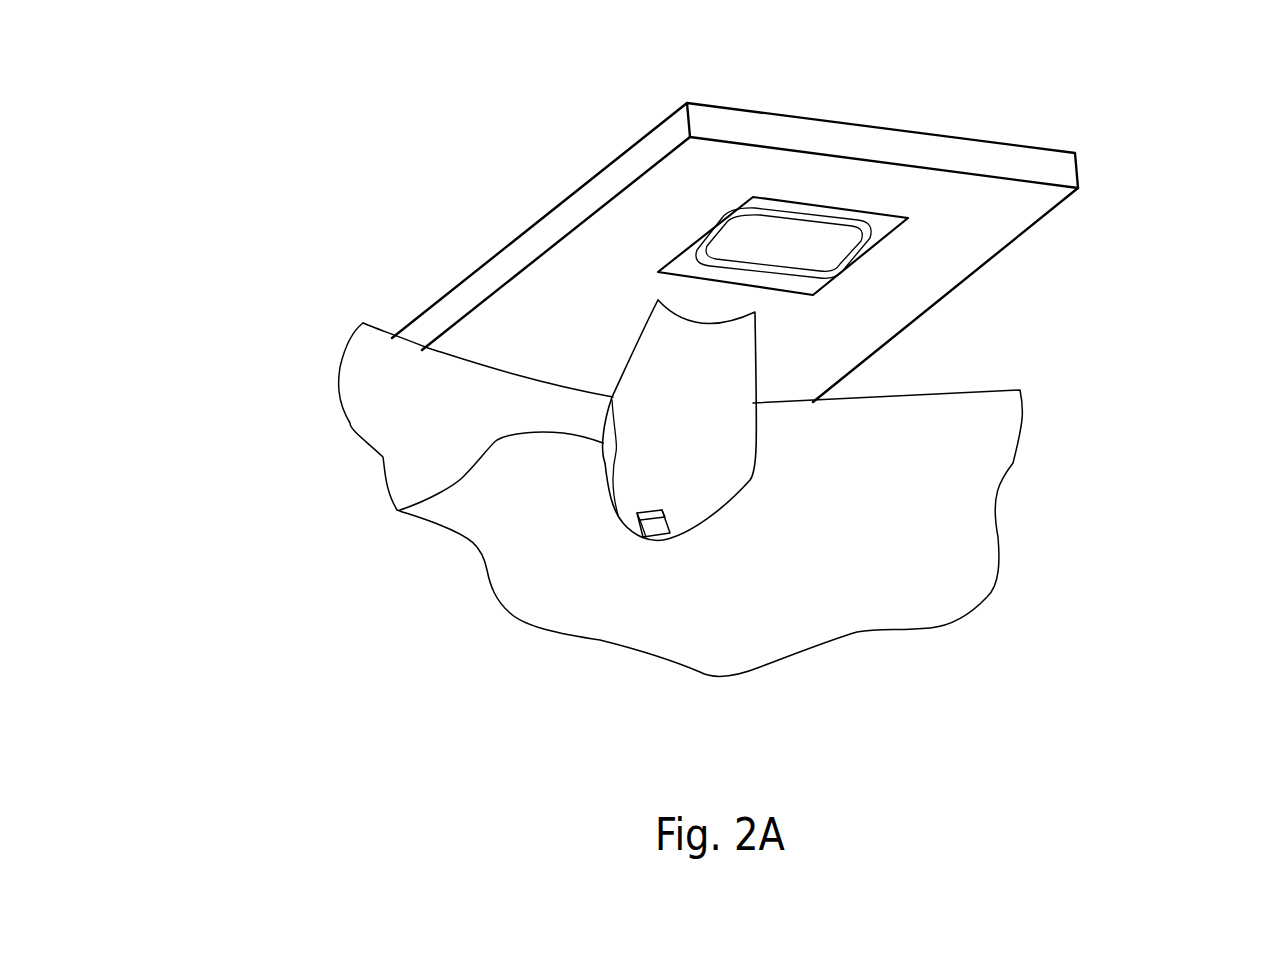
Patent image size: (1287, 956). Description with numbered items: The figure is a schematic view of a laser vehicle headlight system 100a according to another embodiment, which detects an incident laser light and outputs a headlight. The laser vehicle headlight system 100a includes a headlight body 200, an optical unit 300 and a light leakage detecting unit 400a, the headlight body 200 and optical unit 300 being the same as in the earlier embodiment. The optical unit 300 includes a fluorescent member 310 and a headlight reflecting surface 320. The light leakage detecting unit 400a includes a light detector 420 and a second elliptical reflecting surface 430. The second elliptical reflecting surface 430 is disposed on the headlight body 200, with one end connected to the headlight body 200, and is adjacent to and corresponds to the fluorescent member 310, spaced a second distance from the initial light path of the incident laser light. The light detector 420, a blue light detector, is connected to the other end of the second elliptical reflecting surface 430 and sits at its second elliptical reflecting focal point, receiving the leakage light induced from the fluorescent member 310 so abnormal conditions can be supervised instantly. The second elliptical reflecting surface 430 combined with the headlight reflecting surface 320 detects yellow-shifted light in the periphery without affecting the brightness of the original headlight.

The laser vehicle headlight system 100a is at (302, 82).
The headlight body 200 is at (623, 168).
The optical unit 300 is at (1162, 263).
The fluorescent member 310 is at (817, 265).
The headlight reflecting surface 320 is at (973, 430).
The light leakage detecting unit 400a is at (347, 633).
The light detector 420 is at (650, 542).
The second elliptical reflecting surface 430 is at (400, 511).